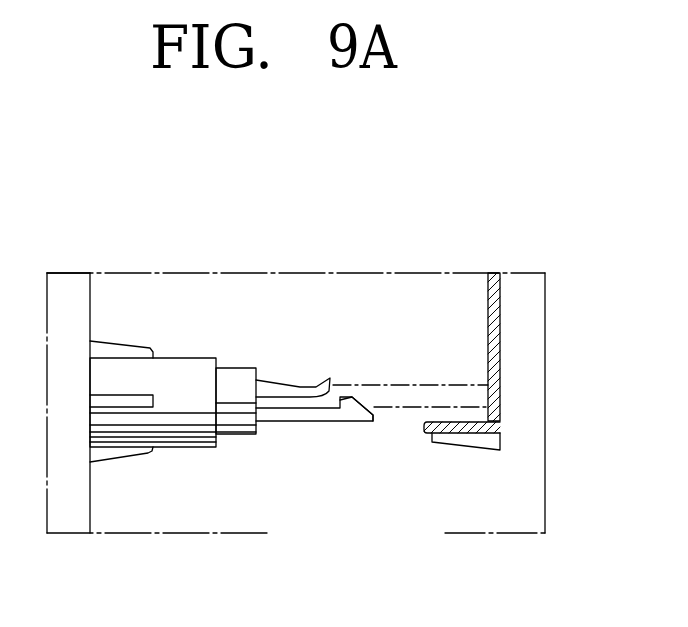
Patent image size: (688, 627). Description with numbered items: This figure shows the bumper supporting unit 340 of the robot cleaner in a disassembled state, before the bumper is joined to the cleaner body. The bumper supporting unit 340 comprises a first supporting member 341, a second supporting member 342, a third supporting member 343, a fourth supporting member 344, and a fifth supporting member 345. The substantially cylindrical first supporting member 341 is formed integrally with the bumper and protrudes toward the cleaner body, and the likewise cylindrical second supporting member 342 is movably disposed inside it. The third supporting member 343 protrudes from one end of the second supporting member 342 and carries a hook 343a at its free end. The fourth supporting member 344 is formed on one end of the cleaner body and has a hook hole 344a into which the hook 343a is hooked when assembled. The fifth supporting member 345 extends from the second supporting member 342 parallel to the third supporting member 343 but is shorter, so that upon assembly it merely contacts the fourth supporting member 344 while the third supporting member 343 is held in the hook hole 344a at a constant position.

The bumper supporting unit 340 is at (488, 215).
The first supporting member 341 is at (172, 372).
The second supporting member 342 is at (238, 377).
The third supporting member 343 is at (341, 400).
The hook 343a is at (355, 410).
The fourth supporting member 344 is at (447, 423).
The hook hole 344a is at (497, 404).
The fifth supporting member 345 is at (315, 385).